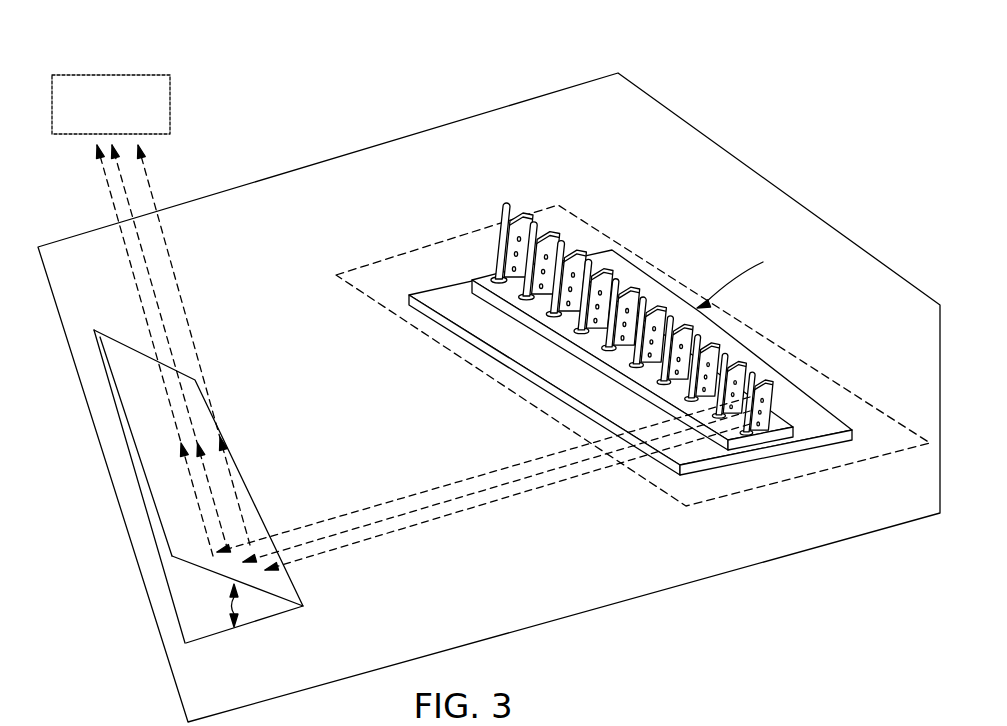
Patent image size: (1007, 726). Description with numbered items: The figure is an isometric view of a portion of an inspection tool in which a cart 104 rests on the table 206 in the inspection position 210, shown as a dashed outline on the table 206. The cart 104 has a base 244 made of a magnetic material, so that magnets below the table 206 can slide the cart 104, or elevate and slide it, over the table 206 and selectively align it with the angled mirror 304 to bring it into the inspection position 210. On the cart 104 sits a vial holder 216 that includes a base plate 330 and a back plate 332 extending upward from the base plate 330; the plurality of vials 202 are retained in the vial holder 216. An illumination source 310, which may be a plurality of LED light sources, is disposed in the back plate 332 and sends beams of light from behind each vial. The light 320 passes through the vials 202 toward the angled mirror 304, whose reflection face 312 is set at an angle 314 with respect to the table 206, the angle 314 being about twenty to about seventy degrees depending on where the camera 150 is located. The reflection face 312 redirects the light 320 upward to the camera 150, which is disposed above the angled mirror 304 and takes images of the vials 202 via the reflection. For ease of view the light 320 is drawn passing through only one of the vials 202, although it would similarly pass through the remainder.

The camera 150 is at (147, 72).
The table 206 is at (533, 123).
The cart 104 is at (483, 195).
The inspection position 210 is at (595, 227).
The illumination source 310 is at (520, 238).
The vial holder 216 is at (748, 277).
The back plate 332 is at (777, 368).
The base 244 is at (803, 410).
The plurality of vials 202 is at (580, 302).
The base plate 330 is at (773, 438).
The light 320 is at (373, 477).
The reflection face 312 is at (117, 357).
The angle 314 is at (236, 606).
The angled mirror 304 is at (219, 614).